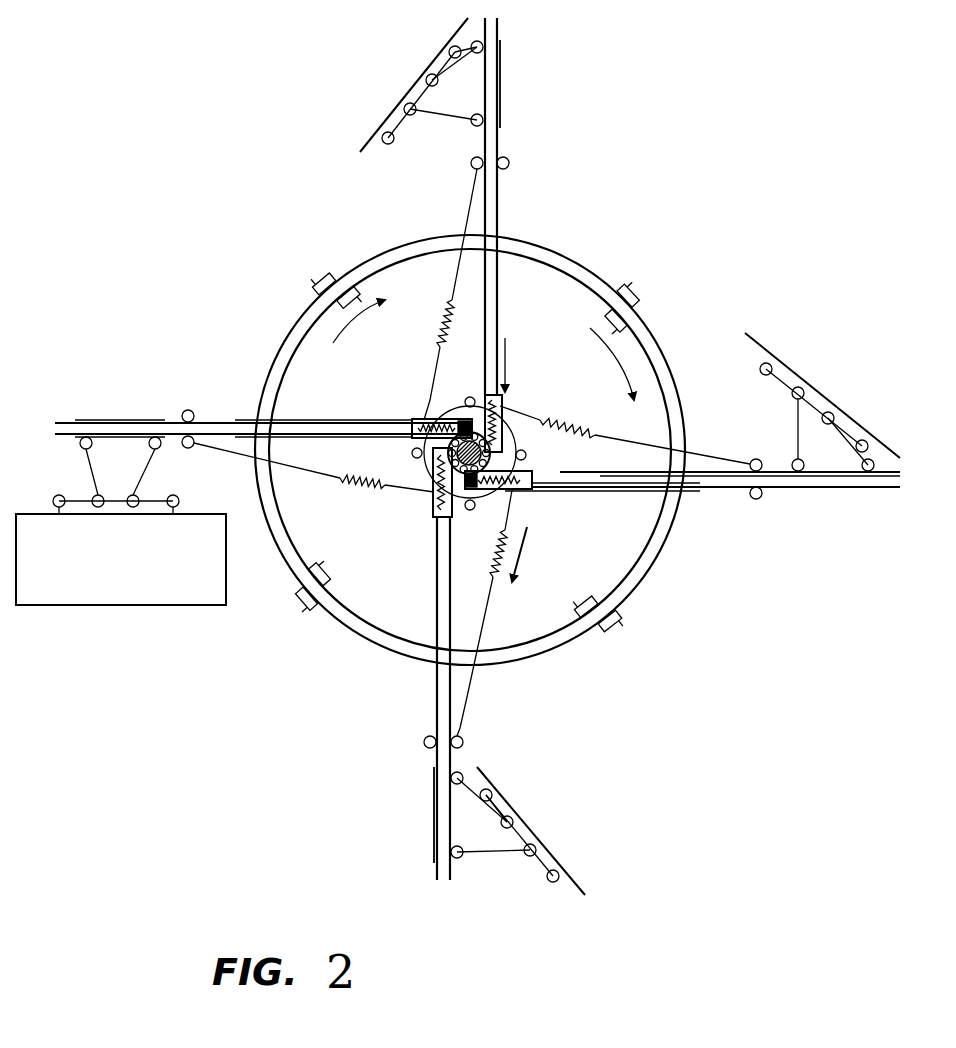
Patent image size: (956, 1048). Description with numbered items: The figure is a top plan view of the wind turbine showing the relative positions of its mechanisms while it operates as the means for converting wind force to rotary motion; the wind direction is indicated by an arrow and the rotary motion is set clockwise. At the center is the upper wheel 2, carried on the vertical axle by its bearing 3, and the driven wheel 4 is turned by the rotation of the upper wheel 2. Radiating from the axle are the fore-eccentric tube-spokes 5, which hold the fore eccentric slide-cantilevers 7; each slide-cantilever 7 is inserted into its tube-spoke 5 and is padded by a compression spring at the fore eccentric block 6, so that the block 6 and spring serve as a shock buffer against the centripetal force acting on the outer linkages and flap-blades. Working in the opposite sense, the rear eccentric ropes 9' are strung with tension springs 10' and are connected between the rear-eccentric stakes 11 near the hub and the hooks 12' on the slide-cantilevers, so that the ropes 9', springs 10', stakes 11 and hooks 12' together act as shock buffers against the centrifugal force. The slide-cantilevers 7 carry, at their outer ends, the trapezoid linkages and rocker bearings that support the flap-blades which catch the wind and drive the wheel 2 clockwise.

The upper wheel 2 is at (470, 474).
The bearing for upper wheel 3 is at (415, 503).
The driven wheel 4 is at (468, 495).
The upper fore-eccentric tube-spoke 5 is at (702, 514).
The upper fore eccentric block 6 is at (263, 390).
The upper fore eccentric slide-cantilever 7 is at (759, 534).
The lower rear eccentric rope 9' is at (498, 613).
The tension spring 10' is at (314, 494).
The upper rear-eccentric stake 11 is at (521, 497).
The hook at the lower fore eccentric slide-cantilever 12' is at (410, 766).